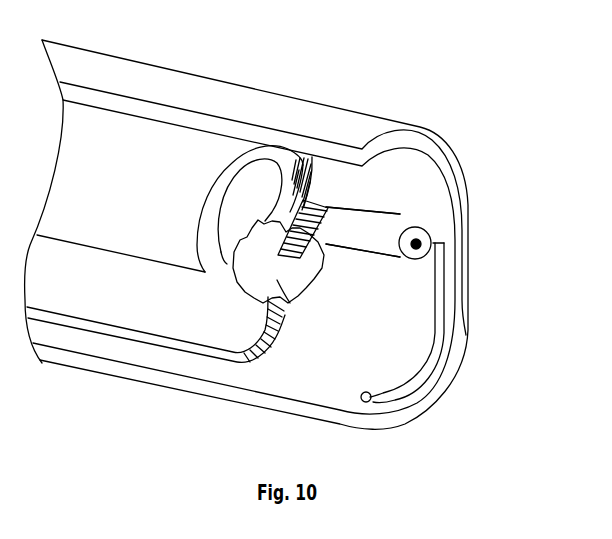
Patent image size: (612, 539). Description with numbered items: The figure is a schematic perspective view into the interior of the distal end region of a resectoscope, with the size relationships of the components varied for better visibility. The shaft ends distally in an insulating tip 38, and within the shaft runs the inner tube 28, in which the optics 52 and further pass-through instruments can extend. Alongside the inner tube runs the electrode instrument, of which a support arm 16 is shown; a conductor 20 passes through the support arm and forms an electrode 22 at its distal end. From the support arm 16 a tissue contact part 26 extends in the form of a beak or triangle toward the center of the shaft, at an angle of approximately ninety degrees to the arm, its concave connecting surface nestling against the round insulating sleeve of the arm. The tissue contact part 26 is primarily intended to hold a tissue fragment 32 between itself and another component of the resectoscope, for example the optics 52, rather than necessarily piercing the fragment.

The insulating tip 38 is at (363, 112).
The optics 52 is at (153, 220).
The inner tube 28 is at (148, 343).
The tissue fragment 32 is at (305, 288).
The tissue contact part 26 is at (400, 213).
The support arm 16 is at (400, 214).
The conductor 20 is at (428, 231).
The electrode 22 is at (443, 325).